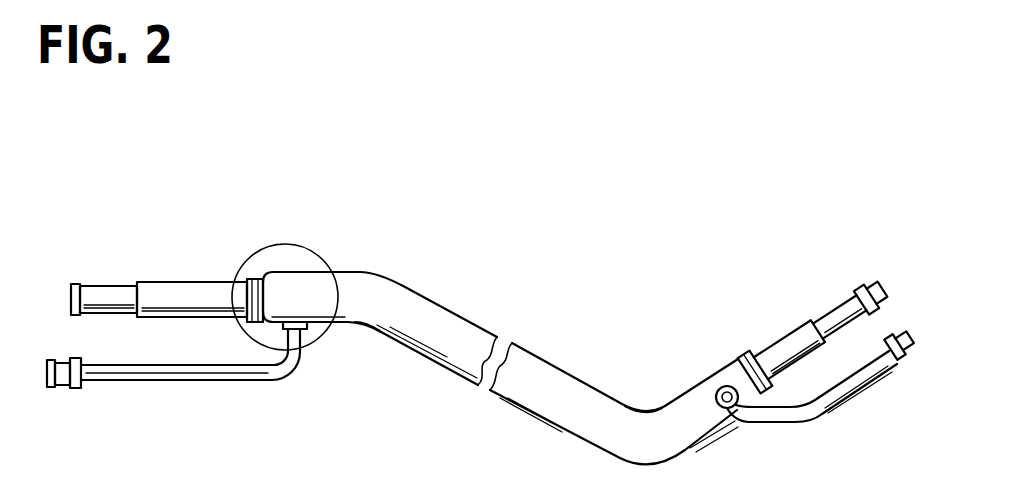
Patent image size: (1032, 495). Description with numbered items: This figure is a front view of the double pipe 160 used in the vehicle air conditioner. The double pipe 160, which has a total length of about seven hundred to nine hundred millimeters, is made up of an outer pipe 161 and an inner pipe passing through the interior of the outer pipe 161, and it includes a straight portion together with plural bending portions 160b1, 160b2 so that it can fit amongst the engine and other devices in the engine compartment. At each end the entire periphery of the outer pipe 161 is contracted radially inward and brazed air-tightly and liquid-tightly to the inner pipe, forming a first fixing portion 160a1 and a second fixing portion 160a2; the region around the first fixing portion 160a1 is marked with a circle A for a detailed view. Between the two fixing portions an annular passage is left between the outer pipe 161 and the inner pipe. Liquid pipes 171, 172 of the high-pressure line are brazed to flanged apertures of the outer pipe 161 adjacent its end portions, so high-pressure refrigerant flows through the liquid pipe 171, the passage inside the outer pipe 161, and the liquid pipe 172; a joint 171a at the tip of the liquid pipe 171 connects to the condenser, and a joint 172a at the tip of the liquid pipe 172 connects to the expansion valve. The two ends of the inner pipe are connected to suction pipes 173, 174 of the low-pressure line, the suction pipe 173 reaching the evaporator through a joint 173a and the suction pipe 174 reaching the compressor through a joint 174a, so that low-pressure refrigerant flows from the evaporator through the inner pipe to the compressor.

The double pipe 160 is at (541, 362).
The first fixing portion 160a1 is at (256, 280).
The second fixing portion 160a2 is at (747, 360).
The bending portion 160b1 is at (373, 331).
The bending portion 160b2 is at (650, 413).
The outer pipe 161 is at (433, 311).
The liquid pipe 171 is at (206, 384).
The joint 171a is at (70, 392).
The liquid pipe 172 is at (820, 420).
The joint 172a is at (905, 356).
The suction pipe 173 is at (835, 309).
The joint 173a is at (866, 284).
The suction pipe 174 is at (112, 292).
The joint 174a is at (75, 290).
The detail region A is at (327, 262).